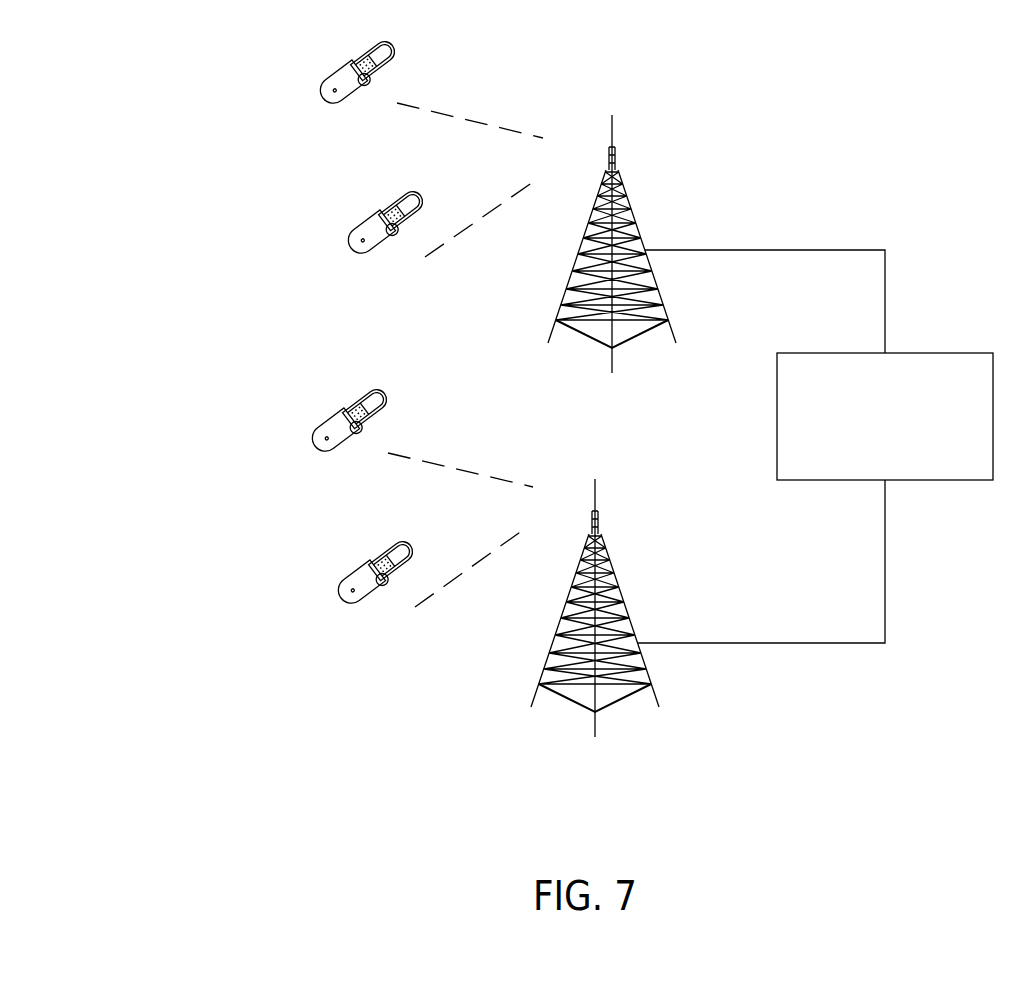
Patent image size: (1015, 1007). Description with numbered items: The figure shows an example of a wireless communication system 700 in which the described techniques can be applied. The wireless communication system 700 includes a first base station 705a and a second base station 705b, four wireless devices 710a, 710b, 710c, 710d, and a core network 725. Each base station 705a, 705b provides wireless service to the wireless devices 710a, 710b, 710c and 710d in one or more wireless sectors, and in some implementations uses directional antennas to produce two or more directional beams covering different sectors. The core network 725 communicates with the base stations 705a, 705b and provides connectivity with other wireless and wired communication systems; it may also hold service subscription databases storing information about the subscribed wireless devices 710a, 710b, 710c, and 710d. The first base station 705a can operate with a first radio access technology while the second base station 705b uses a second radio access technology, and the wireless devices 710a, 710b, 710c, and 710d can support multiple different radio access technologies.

The wireless communication system 700 is at (202, 172).
The wireless device 710a is at (429, 79).
The wireless device 710b is at (438, 208).
The wireless device 710c is at (420, 424).
The wireless device 710d is at (428, 560).
The first base station 705a is at (633, 248).
The second base station 705b is at (616, 616).
The core network 725 is at (815, 446).